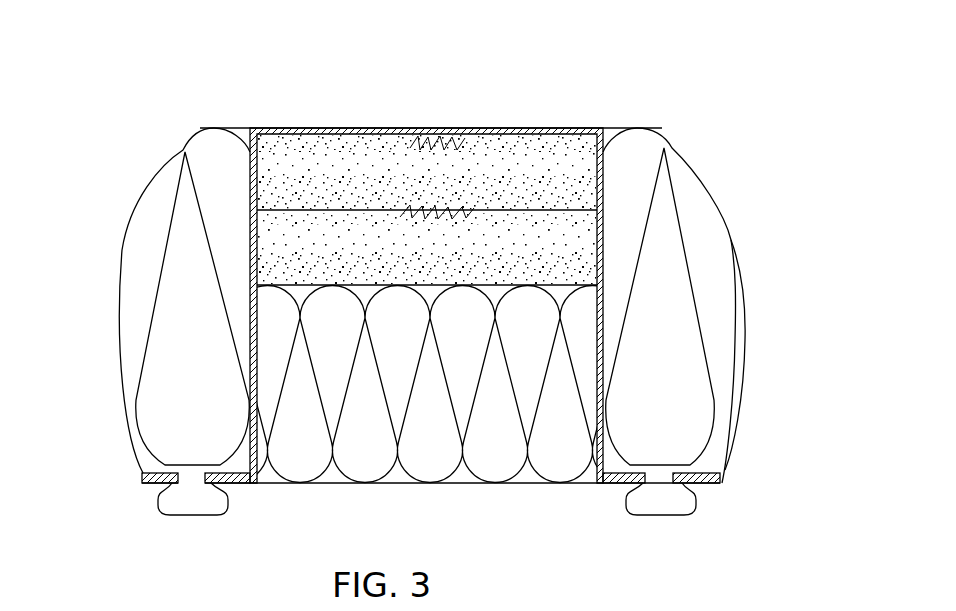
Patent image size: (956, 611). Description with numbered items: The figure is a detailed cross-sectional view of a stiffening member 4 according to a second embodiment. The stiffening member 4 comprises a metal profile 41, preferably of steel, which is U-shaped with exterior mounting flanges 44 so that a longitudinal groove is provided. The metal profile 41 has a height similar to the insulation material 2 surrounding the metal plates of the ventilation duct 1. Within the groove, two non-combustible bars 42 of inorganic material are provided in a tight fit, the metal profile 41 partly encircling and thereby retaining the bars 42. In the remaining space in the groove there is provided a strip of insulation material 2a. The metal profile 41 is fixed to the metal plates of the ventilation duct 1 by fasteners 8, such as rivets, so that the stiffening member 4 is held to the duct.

The stiffening member 4 is at (585, 63).
The metal profile 41 is at (603, 180).
The non-combustible bars 42 is at (297, 167).
The ventilation duct 1 is at (585, 485).
The exterior mounting flanges 44 is at (147, 485).
The fasteners 8 is at (196, 515).
The insulation material 2 is at (702, 234).
The strip of insulation material 2a is at (495, 455).